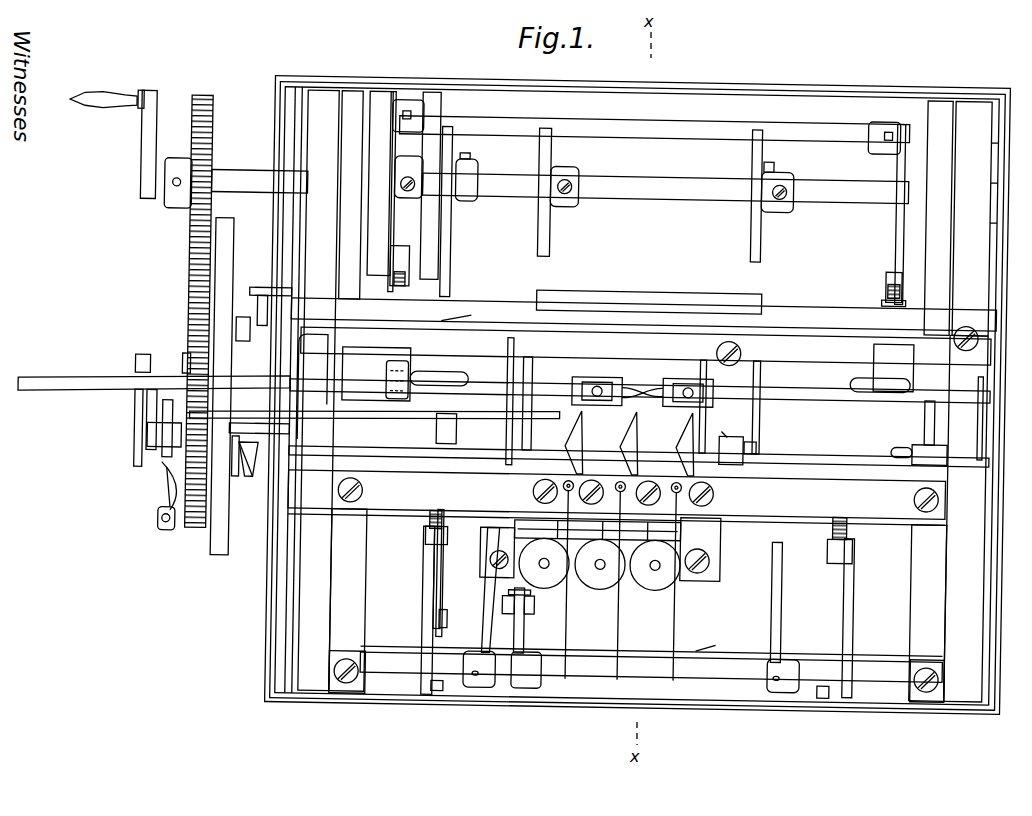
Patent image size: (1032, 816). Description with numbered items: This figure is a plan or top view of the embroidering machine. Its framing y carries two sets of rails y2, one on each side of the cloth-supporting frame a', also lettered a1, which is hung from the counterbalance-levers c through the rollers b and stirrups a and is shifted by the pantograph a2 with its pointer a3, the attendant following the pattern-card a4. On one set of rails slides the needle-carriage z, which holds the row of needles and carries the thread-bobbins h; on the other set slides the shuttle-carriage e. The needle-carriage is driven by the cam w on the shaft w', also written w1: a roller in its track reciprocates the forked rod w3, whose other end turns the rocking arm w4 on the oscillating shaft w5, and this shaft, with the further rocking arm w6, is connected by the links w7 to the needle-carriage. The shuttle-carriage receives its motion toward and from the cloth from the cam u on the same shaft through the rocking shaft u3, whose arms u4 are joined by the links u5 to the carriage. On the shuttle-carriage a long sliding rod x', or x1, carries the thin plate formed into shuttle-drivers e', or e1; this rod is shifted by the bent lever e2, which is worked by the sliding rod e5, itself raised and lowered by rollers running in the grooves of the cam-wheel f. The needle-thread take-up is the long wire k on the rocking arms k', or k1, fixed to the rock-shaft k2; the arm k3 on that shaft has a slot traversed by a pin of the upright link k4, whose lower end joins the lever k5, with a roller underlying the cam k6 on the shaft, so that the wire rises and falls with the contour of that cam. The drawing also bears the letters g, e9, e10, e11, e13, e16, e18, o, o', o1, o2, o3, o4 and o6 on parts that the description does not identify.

The crank gear wheel g is at (201, 110).
The cam-wheel f is at (222, 386).
The pattern-card a4 is at (70, 395).
The pointer a3 is at (599, 385).
The pantograph a2 is at (375, 407).
The lever e16 is at (132, 447).
The lever e18 is at (147, 472).
The spring e13 is at (160, 508).
The foot e11 is at (161, 524).
The wedge e9 is at (246, 467).
The bar e10 is at (257, 455).
The bent lever e2 is at (269, 297).
The sliding rod e5 is at (242, 319).
The shuttle-carriage e is at (642, 396).
The rails y2 is at (649, 396).
The needle-carriage z is at (616, 585).
The framing y is at (634, 463).
The cam u is at (636, 197).
The arms u4 is at (657, 120).
The links u5 is at (648, 267).
The cam w is at (432, 185).
The rod w3 is at (453, 381).
The rocking shaft u3 is at (655, 128).
The shaft w' is at (651, 180).
The shaft w1 is at (651, 180).
The cam k6 is at (558, 192).
The lever k5 is at (538, 278).
The bar o4 is at (747, 297).
The block o6 is at (760, 240).
The long rod x' is at (449, 314).
The long rod x1 is at (449, 314).
The shuttle-drivers e' is at (645, 394).
The shuttle-drivers e1 is at (645, 394).
The frame a' is at (627, 393).
The frame a1 is at (627, 393).
The rollers b is at (667, 405).
The stirrups a is at (660, 373).
The counterbalance-levers c is at (643, 378).
The pointer o2 is at (641, 444).
The pointer o3 is at (729, 425).
The pin o is at (597, 530).
The pin o' is at (620, 581).
The pin o1 is at (620, 581).
The thread-bobbins h is at (600, 564).
The rocking arms k' is at (631, 605).
The rocking arms k1 is at (631, 605).
The take-up wire k is at (636, 603).
The upright link k4 is at (530, 600).
The arm k3 is at (526, 628).
The rock-shaft k2 is at (637, 675).
The links w7 is at (635, 621).
The rocking arm w4 is at (436, 636).
The rocking arm w6 is at (828, 698).
The oscillating shaft w5 is at (716, 641).